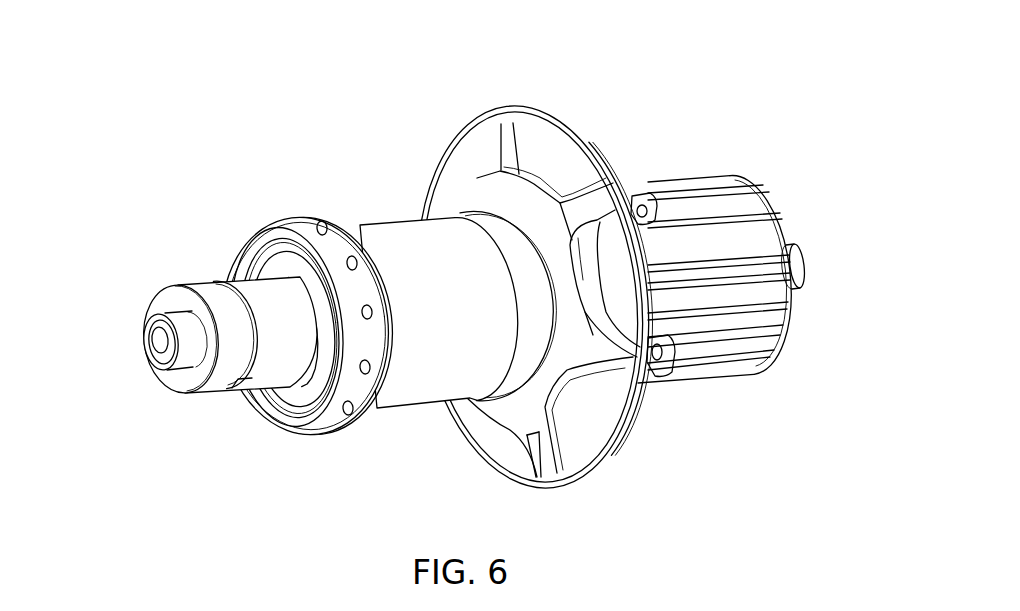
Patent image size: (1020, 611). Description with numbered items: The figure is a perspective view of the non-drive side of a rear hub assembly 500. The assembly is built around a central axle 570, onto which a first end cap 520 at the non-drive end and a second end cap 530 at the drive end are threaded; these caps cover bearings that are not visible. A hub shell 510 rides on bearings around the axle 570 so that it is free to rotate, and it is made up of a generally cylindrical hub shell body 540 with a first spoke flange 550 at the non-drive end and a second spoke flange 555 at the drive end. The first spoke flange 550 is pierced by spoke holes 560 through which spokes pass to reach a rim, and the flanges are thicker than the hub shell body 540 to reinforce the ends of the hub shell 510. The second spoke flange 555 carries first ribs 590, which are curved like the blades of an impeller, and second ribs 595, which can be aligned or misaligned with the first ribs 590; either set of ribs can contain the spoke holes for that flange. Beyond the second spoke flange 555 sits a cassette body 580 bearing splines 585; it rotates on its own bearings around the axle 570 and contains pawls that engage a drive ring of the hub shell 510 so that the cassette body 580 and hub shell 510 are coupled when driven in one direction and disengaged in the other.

The rear hub assembly 500 is at (150, 92).
The hub shell 510 is at (383, 208).
The first end cap 520 is at (145, 323).
The second end cap 530 is at (802, 255).
The hub shell body 540 is at (430, 385).
The first spoke flange 550 is at (285, 230).
The second spoke flange 555 is at (570, 160).
The spoke holes 560 is at (363, 367).
The axle 570 is at (232, 297).
The cassette body 580 is at (733, 243).
The splines 585 is at (753, 322).
The first ribs 590 is at (633, 185).
The second ribs 595 is at (490, 160).